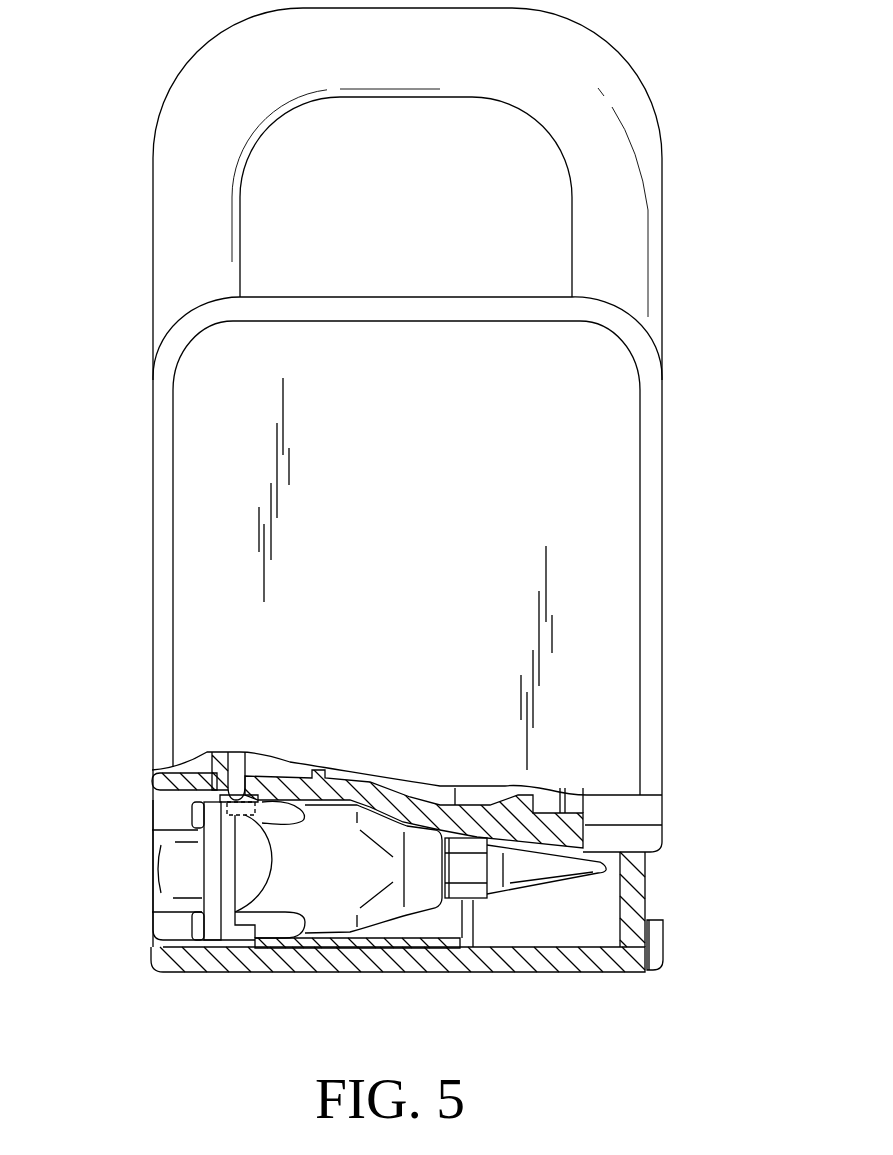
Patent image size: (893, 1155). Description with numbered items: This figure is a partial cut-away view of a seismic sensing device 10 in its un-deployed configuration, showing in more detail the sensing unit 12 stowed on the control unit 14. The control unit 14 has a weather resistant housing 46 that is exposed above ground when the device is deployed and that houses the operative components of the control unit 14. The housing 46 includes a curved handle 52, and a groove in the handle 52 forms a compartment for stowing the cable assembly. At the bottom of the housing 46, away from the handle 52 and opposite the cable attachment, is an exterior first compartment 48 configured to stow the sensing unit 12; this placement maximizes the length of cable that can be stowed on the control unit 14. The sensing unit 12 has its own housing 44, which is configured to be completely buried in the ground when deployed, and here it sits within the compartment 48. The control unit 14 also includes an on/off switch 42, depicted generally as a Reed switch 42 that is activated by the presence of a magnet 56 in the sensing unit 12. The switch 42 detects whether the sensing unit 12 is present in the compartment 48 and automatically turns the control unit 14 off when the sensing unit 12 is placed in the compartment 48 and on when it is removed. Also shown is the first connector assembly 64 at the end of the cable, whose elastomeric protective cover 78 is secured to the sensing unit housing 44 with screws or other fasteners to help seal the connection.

The seismic sensing device 10 is at (138, 72).
The sensing unit 12 is at (532, 908).
The control unit 14 is at (690, 610).
The on/off switch 42 is at (240, 768).
The housing 44 is at (423, 900).
The weather resistant housing 46 is at (648, 716).
The first compartment 48 is at (430, 925).
The curved handle 52 is at (541, 42).
The magnet 56 is at (258, 825).
The first connector assembly 64 is at (136, 884).
The protective cover 78 is at (165, 863).